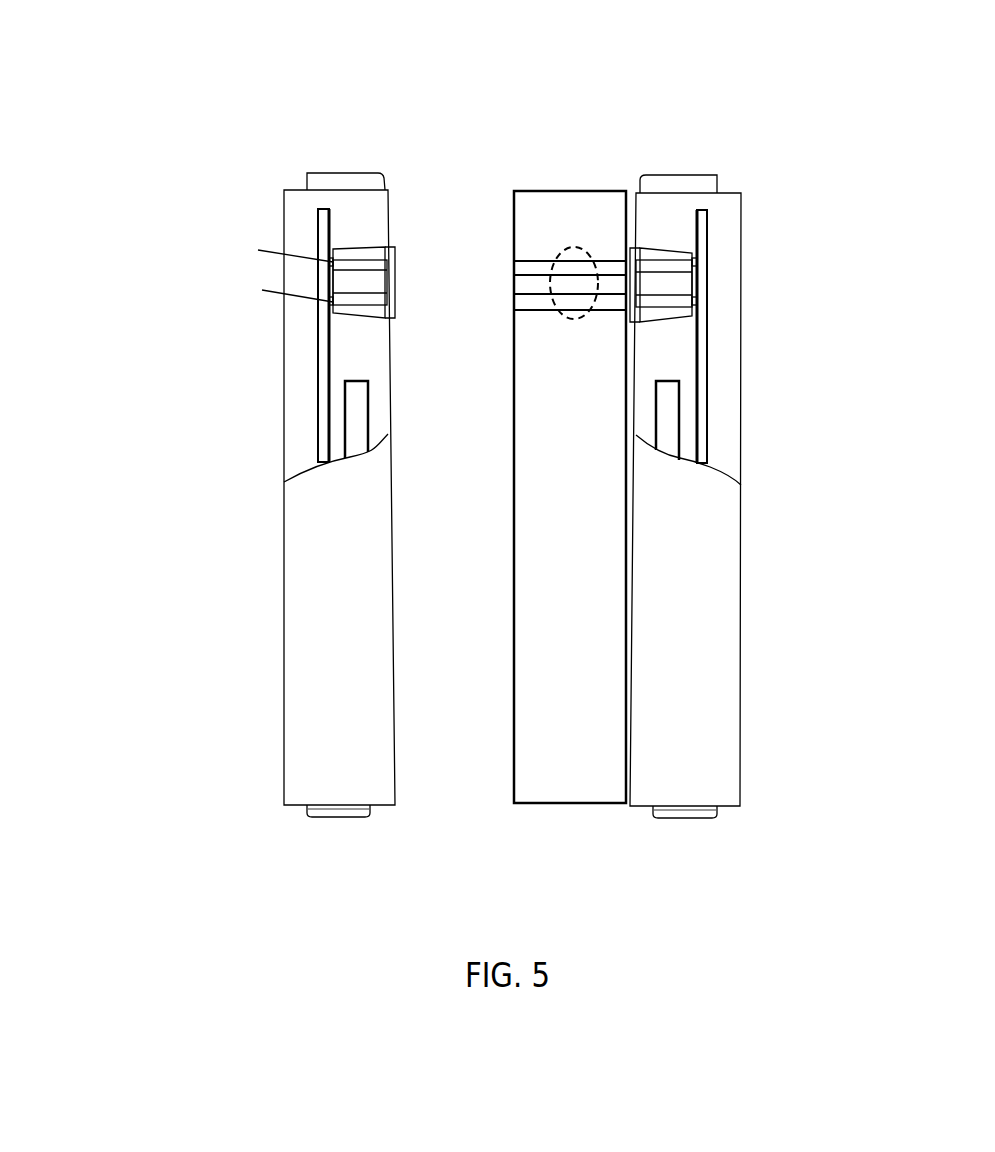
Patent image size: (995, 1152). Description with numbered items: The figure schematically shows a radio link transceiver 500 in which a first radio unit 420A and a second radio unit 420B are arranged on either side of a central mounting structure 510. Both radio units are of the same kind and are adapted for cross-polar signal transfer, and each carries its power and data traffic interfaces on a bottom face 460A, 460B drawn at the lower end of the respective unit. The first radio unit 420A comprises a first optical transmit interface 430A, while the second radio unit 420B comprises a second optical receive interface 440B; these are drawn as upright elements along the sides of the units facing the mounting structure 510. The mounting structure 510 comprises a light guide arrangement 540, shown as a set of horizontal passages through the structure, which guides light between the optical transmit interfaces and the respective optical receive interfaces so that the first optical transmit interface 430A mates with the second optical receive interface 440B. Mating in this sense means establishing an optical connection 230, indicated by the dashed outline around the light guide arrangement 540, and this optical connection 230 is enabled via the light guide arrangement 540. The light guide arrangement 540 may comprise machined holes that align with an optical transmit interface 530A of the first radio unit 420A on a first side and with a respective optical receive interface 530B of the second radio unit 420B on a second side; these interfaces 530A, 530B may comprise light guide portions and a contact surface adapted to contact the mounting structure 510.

The radio link transceiver 500 is at (110, 75).
The optical connection 230 is at (566, 250).
The mounting structure 510 is at (588, 621).
The light guide arrangement 540 is at (583, 264).
The first radio unit 420A is at (285, 597).
The second radio unit 420B is at (739, 644).
The first optical transmit interface 430A is at (328, 277).
The second optical receive interface 440B is at (710, 283).
The optical transmit interface 530A is at (362, 297).
The optical receive interface 530B is at (657, 300).
The bottom face 460A is at (338, 823).
The bottom face 460B is at (690, 830).